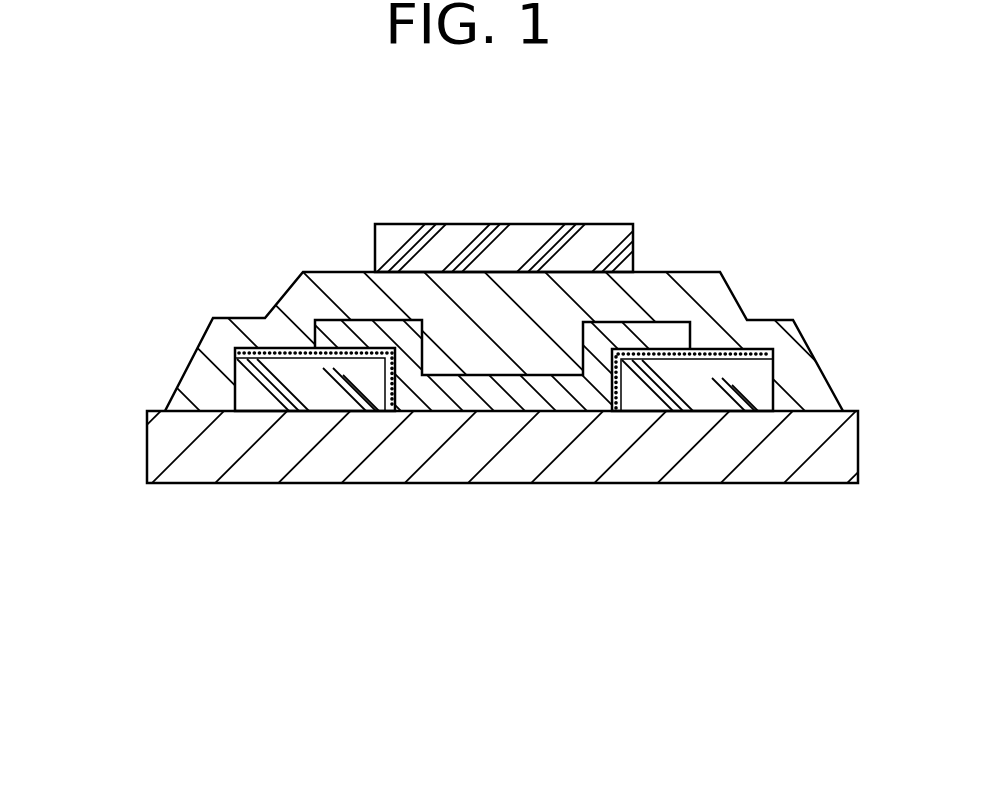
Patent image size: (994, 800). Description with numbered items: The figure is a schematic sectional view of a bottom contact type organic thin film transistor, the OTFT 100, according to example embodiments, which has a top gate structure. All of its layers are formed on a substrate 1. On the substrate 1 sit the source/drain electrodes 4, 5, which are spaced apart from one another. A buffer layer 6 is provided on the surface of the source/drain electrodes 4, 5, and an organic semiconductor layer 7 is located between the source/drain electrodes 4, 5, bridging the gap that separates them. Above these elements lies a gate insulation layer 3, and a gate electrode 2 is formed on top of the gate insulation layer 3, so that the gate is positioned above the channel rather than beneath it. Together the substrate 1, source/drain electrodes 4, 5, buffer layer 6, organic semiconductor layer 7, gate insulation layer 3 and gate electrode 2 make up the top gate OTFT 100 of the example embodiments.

The OTFT 100 is at (130, 233).
The substrate 1 is at (648, 470).
The gate electrode 2 is at (603, 233).
The gate insulation layer 3 is at (660, 285).
The source/drain electrode 4 is at (247, 385).
The source/drain electrode 5 is at (755, 393).
The buffer layer 6 is at (733, 340).
The organic semiconductor layer 7 is at (675, 332).